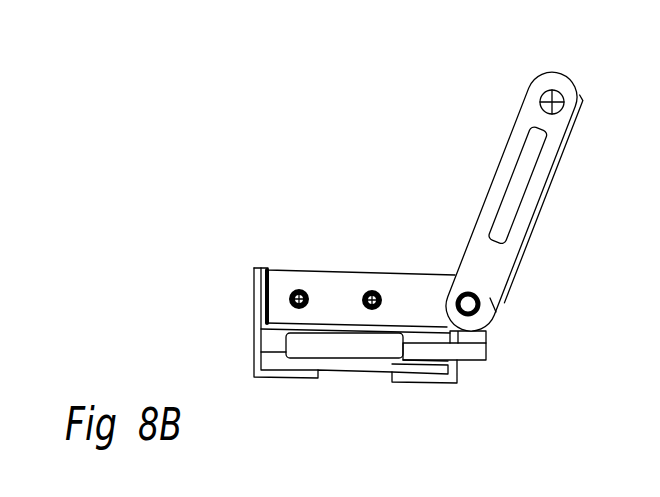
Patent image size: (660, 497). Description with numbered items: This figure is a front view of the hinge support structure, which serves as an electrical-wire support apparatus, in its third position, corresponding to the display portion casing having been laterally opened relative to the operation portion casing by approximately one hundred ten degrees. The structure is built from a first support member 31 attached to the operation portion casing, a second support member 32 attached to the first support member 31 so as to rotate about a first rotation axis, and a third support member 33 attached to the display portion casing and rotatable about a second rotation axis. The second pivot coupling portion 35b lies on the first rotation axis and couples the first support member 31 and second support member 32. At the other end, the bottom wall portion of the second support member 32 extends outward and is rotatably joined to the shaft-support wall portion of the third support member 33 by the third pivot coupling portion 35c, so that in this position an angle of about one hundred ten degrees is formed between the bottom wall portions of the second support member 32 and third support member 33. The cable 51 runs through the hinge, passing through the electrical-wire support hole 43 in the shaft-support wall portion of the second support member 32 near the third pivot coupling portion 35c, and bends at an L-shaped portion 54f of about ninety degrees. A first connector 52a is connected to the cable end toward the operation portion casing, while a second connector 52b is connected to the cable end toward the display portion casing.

The first support member 31 is at (254, 347).
The second support member 32 is at (323, 268).
The third support member 33 is at (520, 101).
The second pivot coupling portion 35b is at (262, 296).
The third pivot coupling portion 35c is at (498, 310).
The electrical-wire support hole 43 is at (553, 90).
The cable 51 is at (472, 362).
The first connector 52a is at (355, 350).
The second connector 52b is at (518, 177).
The L-shaped portion 54f is at (470, 288).